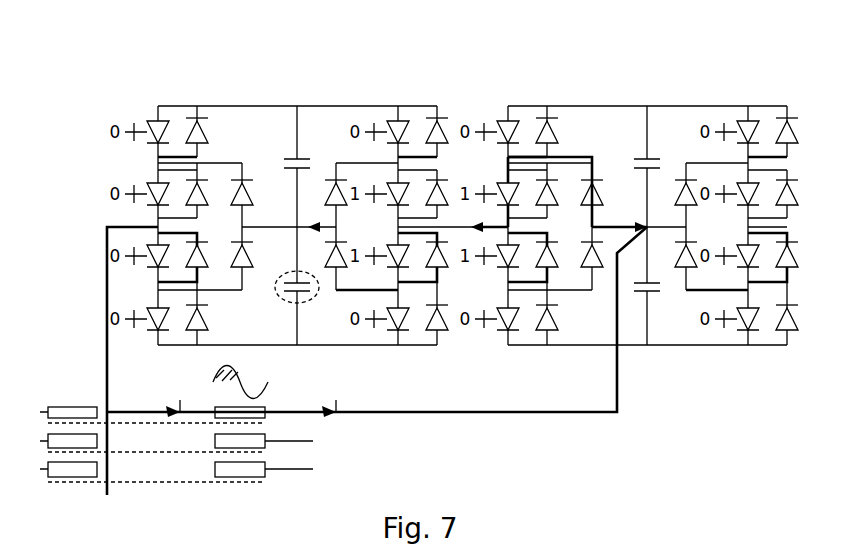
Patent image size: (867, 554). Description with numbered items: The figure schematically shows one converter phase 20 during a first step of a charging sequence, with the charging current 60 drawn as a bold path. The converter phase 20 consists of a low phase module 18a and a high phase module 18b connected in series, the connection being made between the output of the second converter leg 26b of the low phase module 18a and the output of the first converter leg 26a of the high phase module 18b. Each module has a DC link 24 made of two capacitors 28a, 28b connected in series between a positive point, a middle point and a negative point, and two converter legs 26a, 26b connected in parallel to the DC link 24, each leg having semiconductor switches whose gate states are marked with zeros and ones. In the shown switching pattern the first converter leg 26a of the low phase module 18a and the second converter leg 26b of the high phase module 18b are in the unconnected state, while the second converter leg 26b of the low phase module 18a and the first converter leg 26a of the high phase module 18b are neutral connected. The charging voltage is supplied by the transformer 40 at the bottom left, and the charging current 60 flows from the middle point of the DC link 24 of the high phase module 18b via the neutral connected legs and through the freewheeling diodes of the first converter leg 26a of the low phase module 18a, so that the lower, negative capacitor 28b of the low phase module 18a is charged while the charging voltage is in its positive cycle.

The converter phase 20 is at (101, 68).
The low phase module 18a is at (271, 56).
The high phase module 18b is at (652, 56).
The DC link 24 is at (300, 86).
The first converter leg 26a is at (190, 92).
The second converter leg 26b is at (407, 92).
The capacitor 28a is at (299, 140).
The capacitor 28b is at (316, 302).
The transformer 40 is at (159, 495).
The charging current 60 is at (548, 415).